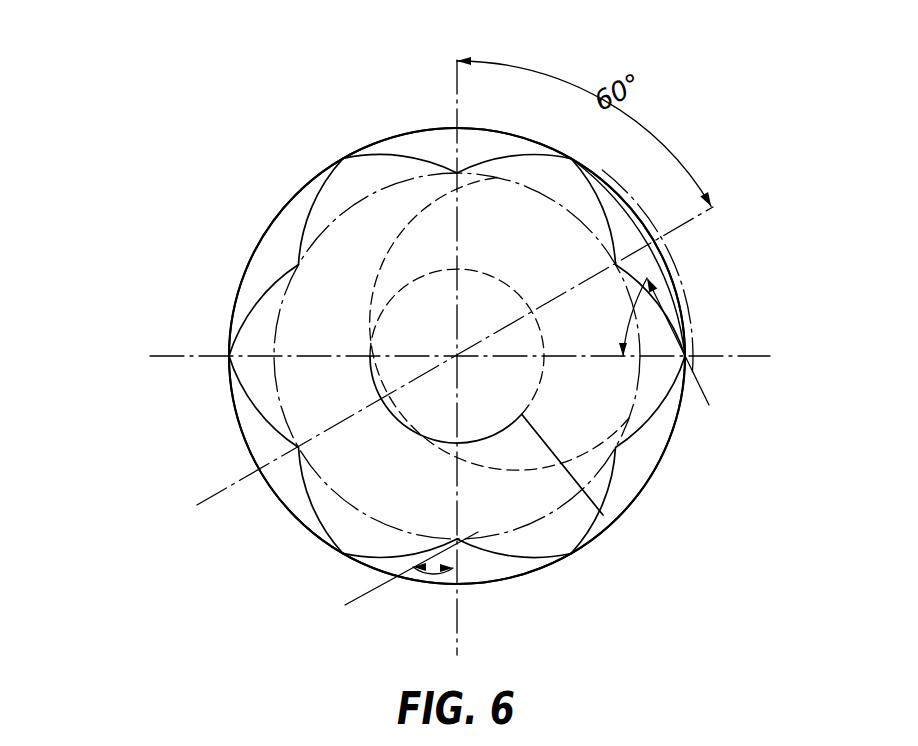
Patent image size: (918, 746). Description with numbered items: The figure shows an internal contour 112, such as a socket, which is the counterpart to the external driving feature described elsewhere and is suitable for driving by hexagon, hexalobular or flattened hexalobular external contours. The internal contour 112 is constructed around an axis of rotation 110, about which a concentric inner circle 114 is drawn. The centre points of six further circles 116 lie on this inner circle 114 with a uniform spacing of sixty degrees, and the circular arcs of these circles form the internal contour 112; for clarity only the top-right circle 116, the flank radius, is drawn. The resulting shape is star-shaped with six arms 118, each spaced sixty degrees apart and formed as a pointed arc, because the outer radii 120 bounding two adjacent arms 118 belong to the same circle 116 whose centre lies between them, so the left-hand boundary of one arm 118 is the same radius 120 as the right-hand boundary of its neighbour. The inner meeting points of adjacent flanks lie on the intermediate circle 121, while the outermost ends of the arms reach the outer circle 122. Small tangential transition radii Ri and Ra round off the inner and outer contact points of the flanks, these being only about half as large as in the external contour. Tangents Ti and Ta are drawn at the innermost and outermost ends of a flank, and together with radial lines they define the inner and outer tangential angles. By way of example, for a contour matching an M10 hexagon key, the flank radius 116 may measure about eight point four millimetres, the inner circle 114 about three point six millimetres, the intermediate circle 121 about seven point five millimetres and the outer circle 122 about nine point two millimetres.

The axis of rotation 110 is at (457, 356).
The internal contour 112 is at (200, 191).
The concentric inner circle 114 is at (603, 515).
The circle, flank radius 116 is at (678, 258).
The spaced arms 118 is at (663, 340).
The radius 120 is at (517, 155).
The intermediate circle 121 is at (290, 290).
The outer circle 122 is at (238, 401).
The outer transition radius Ra is at (571, 160).
The inner transition radius Ri is at (457, 173).
The outer tangent Ta is at (702, 396).
The inner tangent Ti is at (347, 592).